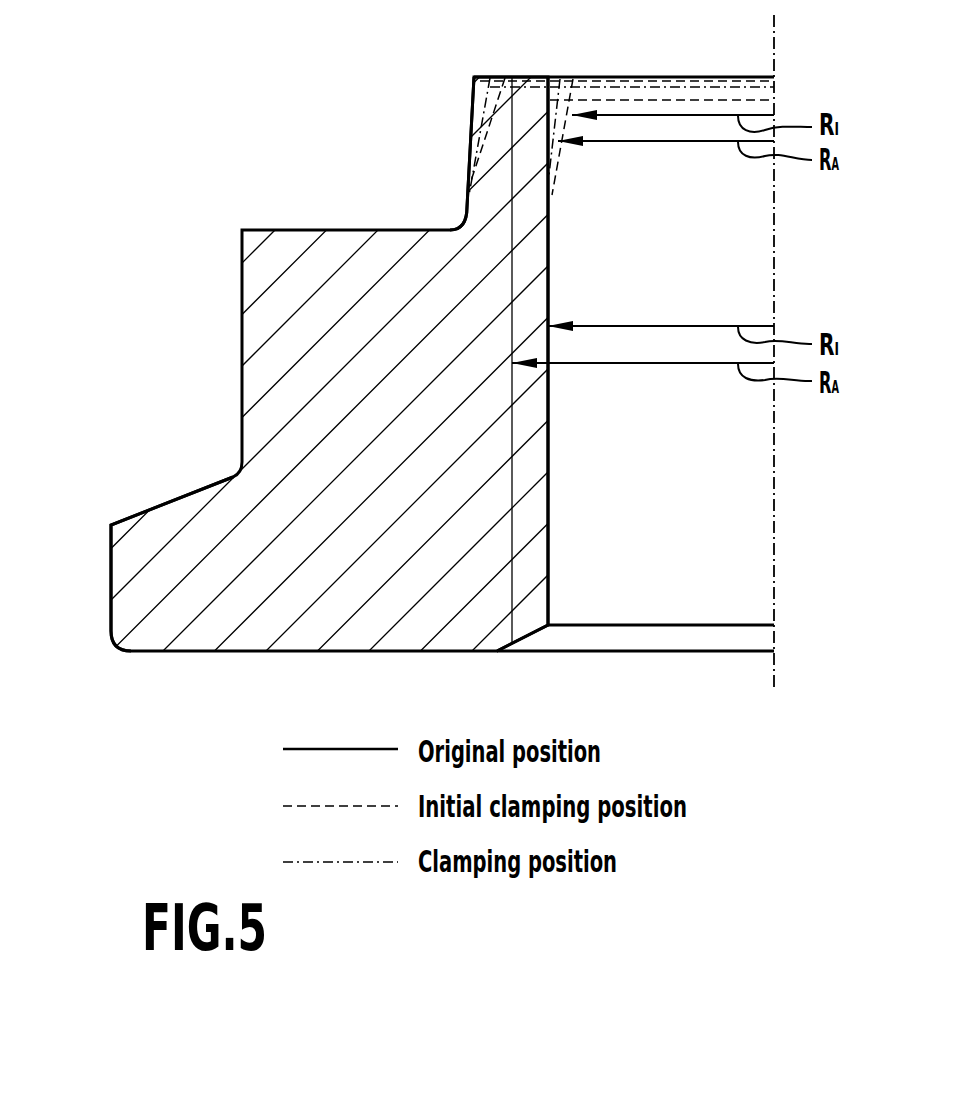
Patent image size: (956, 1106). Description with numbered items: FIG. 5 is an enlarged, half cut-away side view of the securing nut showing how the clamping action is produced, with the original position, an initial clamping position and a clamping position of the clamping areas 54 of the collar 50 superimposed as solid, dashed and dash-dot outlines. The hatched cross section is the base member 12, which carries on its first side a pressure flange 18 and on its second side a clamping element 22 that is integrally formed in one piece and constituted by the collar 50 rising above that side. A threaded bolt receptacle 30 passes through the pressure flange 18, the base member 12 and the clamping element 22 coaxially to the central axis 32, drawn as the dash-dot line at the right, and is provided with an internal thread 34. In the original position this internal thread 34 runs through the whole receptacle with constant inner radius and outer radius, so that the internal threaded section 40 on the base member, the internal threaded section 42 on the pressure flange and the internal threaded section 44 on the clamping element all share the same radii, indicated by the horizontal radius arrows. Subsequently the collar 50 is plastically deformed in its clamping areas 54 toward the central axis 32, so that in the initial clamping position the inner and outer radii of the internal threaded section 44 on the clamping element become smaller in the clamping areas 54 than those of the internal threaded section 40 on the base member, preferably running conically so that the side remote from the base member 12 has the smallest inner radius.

The base member 12 is at (283, 315).
The pressure flange 18 is at (160, 595).
The clamping element 22 is at (457, 172).
The threaded bolt receptacle 30 is at (560, 240).
The central axis 32 is at (774, 195).
The internal thread 34 is at (556, 487).
The internal threaded section on the base member 40 is at (548, 408).
The internal threaded section on the pressure flange 42 is at (548, 585).
The internal threaded section on the clamping element 44 is at (541, 118).
The collar 50 is at (457, 125).
The clamping area 54 is at (540, 118).